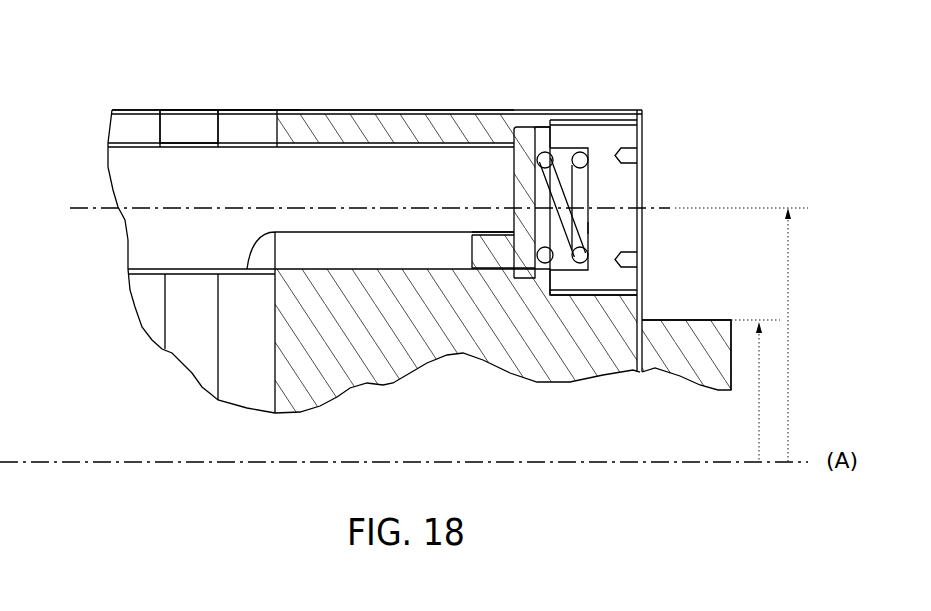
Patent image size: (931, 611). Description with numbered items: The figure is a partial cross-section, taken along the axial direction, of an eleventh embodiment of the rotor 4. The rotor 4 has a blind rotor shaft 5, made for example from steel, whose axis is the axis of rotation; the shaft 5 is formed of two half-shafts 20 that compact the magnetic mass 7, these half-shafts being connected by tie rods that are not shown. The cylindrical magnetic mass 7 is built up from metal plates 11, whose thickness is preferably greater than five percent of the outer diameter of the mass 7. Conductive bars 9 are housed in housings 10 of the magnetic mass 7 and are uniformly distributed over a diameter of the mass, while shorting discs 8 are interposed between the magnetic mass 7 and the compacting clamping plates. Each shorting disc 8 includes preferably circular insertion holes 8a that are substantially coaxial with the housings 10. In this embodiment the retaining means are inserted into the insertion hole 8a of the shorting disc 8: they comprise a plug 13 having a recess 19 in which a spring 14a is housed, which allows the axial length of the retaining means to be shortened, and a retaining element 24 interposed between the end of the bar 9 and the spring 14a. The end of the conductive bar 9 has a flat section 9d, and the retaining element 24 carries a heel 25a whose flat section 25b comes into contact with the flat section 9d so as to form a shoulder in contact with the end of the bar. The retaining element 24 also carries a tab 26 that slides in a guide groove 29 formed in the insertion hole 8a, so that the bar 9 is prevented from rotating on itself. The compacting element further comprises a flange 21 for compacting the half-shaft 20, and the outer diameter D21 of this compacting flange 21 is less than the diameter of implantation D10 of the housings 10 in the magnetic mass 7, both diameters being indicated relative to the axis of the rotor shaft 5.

The rotor 4 is at (203, 90).
The rotor shaft 5 is at (715, 300).
The magnetic mass 7 is at (136, 96).
The shorting disc 8 is at (372, 146).
The insertion hole 8a is at (295, 140).
The conductive bar 9 is at (137, 187).
The flat section 9d is at (412, 242).
The housing 10 is at (110, 128).
The metal plate 11 is at (178, 118).
The plug 13 is at (643, 131).
The spring 14a is at (622, 163).
The recess 19 is at (572, 147).
The half-shaft 20 is at (650, 372).
The compacting flange 21 is at (694, 318).
The retaining element 24 is at (530, 285).
The heel 25a is at (488, 270).
The flat section 25b is at (482, 218).
The tab 26 is at (543, 128).
The guide groove 29 is at (543, 112).
The diameter of implantation D10 is at (790, 334).
The outer diameter D21 is at (757, 430).